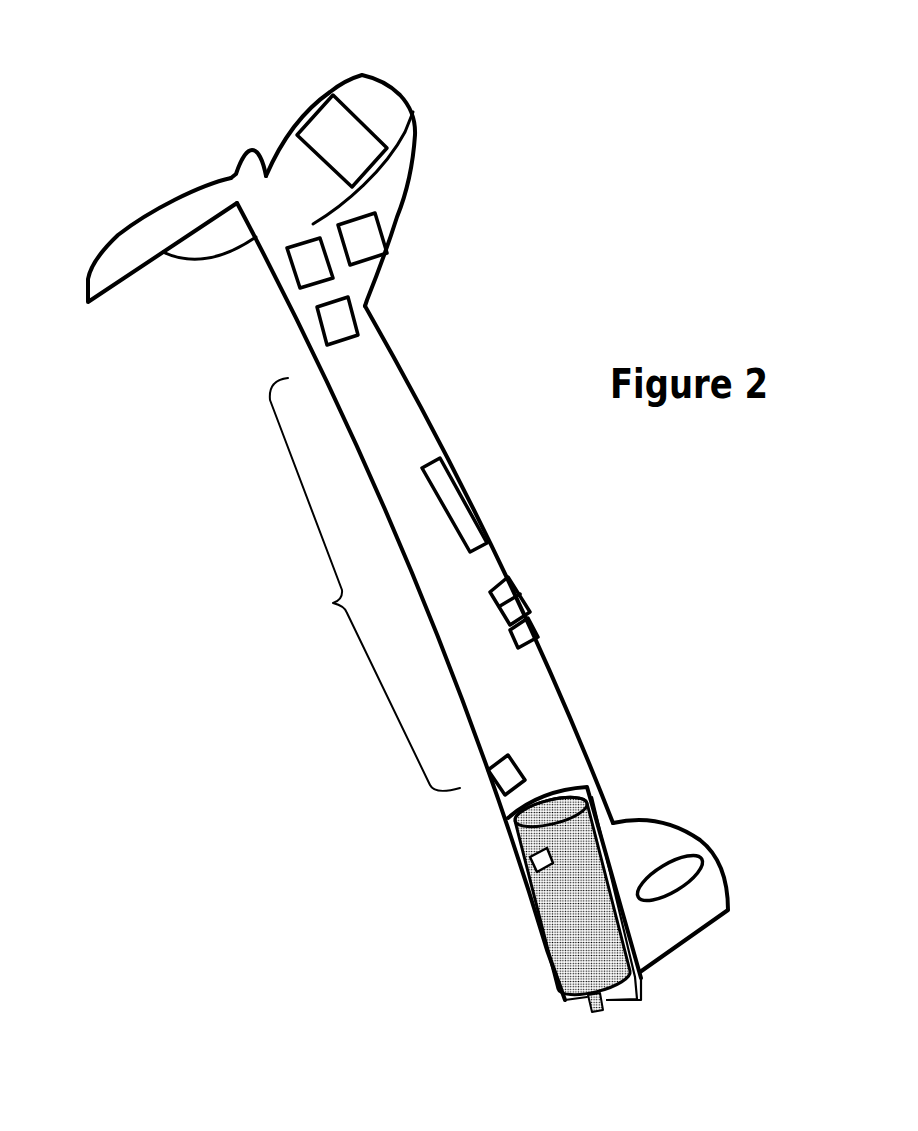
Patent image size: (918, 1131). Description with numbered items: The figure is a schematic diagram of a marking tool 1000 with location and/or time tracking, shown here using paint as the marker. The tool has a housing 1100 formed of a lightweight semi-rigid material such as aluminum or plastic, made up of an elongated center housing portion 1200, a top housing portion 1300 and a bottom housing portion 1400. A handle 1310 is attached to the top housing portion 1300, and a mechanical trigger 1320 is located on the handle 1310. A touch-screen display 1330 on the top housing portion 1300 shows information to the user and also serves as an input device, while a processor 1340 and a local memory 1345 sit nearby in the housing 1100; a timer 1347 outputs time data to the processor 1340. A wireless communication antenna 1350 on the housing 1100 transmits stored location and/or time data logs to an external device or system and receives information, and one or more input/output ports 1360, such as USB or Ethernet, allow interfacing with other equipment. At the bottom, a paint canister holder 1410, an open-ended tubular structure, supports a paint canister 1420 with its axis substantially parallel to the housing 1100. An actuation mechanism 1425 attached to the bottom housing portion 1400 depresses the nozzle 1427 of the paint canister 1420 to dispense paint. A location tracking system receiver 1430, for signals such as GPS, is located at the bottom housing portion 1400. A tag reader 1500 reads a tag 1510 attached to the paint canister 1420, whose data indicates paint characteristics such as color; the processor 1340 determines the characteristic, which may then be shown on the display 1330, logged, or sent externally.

The marking tool 1000 is at (618, 190).
The housing 1100 is at (497, 390).
The elongated center housing portion 1200 is at (318, 618).
The top housing portion 1300 is at (227, 103).
The handle 1310 is at (130, 217).
The mechanical trigger 1320 is at (213, 253).
The display 1330 is at (343, 142).
The processor 1340 is at (382, 233).
The local memory 1345 is at (290, 267).
The timer 1347 is at (317, 327).
The wireless communication antenna 1350 is at (457, 505).
The input/output ports 1360 is at (557, 638).
The bottom housing portion 1400 is at (693, 800).
The paint canister holder 1410 is at (563, 787).
The paint canister 1420 is at (568, 960).
The actuation mechanism 1425 is at (637, 985).
The nozzle 1427 is at (590, 1010).
The location tracking system receiver 1430 is at (703, 857).
The tag reader 1500 is at (485, 785).
The tag 1510 is at (527, 863).